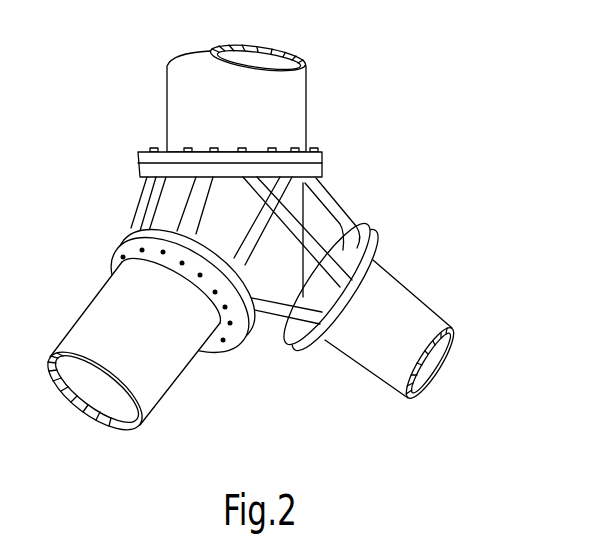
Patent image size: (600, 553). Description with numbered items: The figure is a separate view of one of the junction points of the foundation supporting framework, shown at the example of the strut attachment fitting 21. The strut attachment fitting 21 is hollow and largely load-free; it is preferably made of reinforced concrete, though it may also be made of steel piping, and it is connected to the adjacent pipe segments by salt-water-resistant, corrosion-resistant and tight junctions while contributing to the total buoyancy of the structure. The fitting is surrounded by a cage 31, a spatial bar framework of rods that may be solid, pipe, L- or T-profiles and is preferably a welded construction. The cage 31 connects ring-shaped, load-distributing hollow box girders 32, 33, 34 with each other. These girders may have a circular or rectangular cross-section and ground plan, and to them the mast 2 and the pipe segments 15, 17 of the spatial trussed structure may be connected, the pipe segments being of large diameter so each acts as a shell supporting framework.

The mast 2 is at (280, 107).
The pipe segment 15 is at (165, 370).
The pipe segment 17 is at (407, 312).
The strut attachment fitting 21 is at (296, 244).
The cage 31 is at (360, 197).
The ring-shaped hollow box girder 32 is at (322, 168).
The ring-shaped hollow box girder 33 is at (246, 327).
The ring-shaped hollow box girder 34 is at (305, 350).